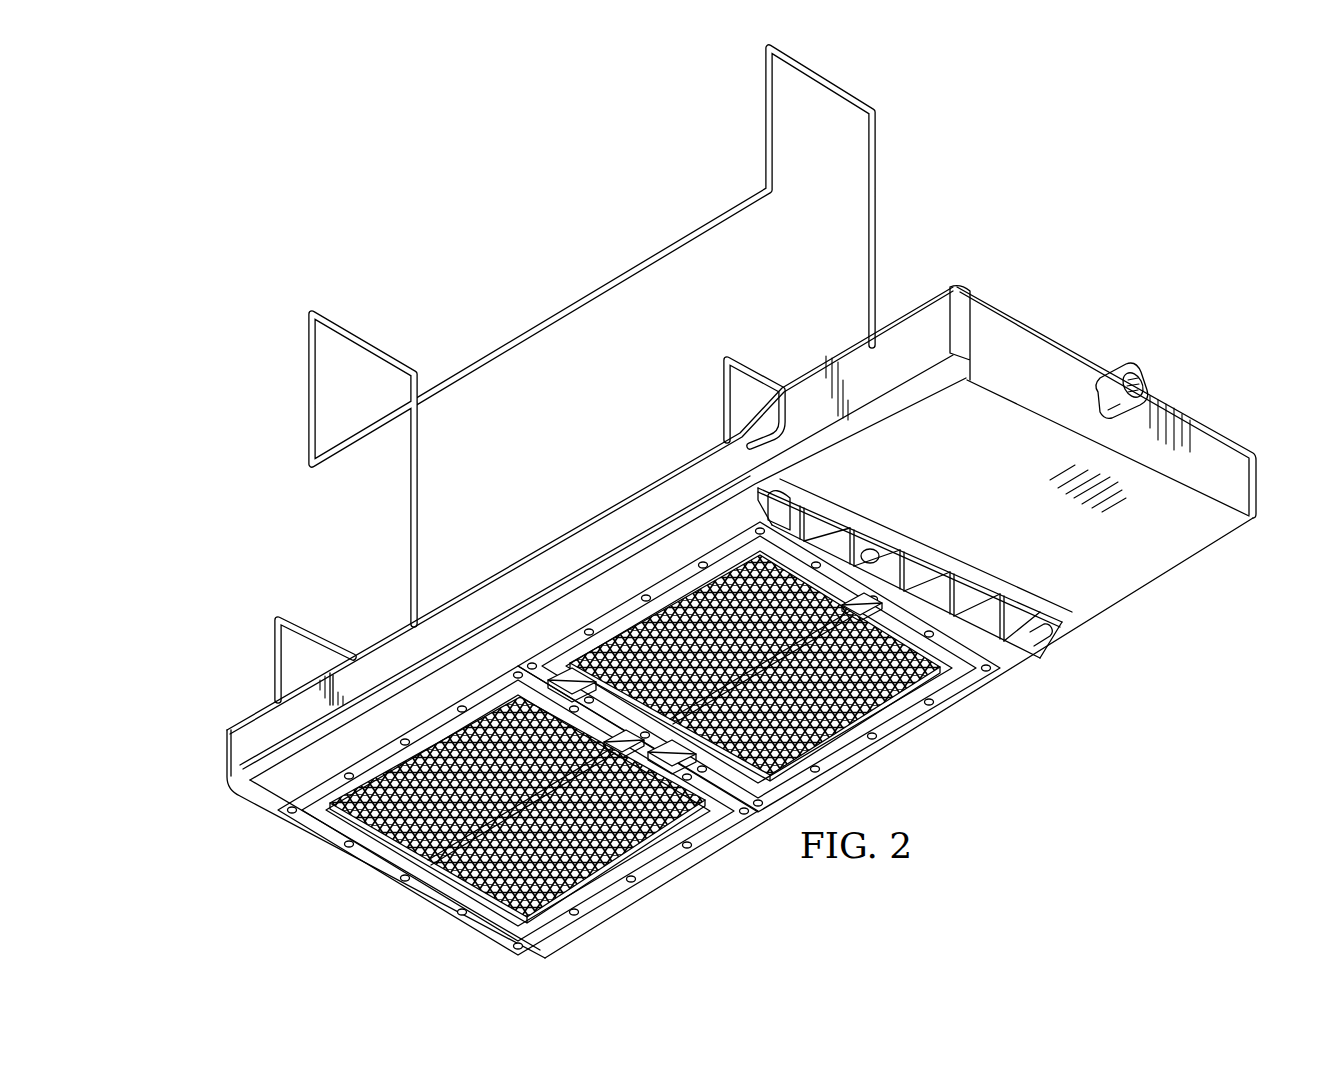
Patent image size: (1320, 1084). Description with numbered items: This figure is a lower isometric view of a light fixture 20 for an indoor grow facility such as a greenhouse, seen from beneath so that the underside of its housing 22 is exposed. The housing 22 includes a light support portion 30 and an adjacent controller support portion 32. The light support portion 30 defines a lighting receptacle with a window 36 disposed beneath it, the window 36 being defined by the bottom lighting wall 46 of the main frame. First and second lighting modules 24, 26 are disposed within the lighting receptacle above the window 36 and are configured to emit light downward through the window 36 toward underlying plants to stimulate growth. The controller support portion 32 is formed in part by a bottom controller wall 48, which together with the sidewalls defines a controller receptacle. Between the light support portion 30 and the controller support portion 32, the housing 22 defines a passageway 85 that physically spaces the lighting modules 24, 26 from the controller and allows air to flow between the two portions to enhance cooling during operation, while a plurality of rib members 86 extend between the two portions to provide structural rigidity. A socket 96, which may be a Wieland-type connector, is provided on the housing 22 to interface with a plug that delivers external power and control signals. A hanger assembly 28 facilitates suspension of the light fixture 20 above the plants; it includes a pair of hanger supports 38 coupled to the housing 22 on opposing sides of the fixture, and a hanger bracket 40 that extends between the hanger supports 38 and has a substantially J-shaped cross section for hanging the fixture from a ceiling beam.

The light fixture 20 is at (700, 556).
The housing 22 is at (740, 622).
The first lighting module 24 is at (639, 739).
The second lighting module 26 is at (646, 880).
The hanger assembly 28 is at (878, 95).
The light support portion 30 is at (215, 762).
The controller support portion 32 is at (1080, 336).
The window 36 is at (594, 902).
The hanger supports 38 is at (729, 358).
The hanger bracket 40 is at (316, 312).
The bottom lighting wall 46 is at (400, 877).
The bottom controller wall 48 is at (1140, 582).
The passageway 85 is at (1046, 636).
The rib members 86 is at (898, 532).
The socket 96 is at (1140, 376).